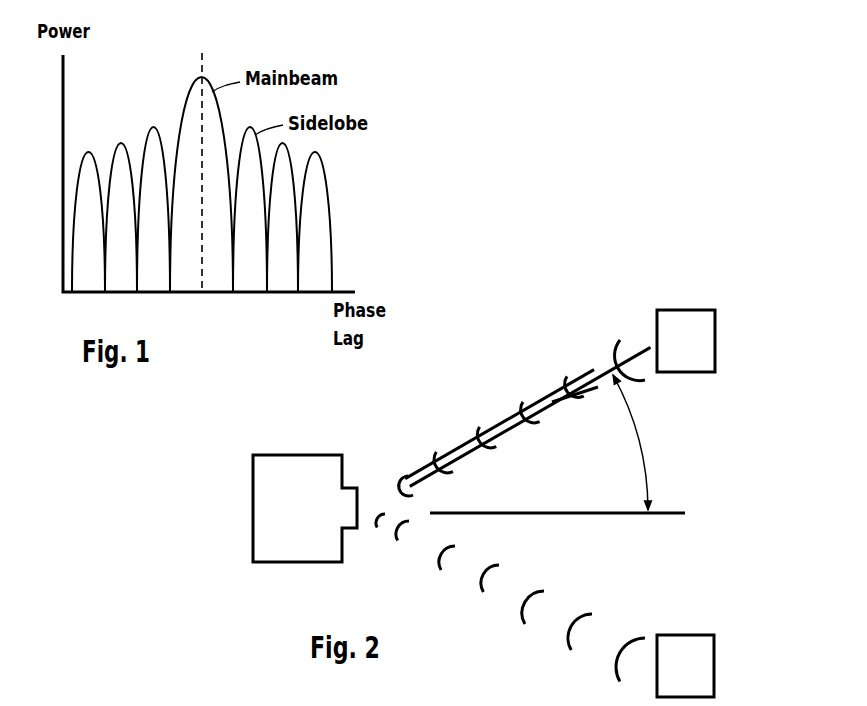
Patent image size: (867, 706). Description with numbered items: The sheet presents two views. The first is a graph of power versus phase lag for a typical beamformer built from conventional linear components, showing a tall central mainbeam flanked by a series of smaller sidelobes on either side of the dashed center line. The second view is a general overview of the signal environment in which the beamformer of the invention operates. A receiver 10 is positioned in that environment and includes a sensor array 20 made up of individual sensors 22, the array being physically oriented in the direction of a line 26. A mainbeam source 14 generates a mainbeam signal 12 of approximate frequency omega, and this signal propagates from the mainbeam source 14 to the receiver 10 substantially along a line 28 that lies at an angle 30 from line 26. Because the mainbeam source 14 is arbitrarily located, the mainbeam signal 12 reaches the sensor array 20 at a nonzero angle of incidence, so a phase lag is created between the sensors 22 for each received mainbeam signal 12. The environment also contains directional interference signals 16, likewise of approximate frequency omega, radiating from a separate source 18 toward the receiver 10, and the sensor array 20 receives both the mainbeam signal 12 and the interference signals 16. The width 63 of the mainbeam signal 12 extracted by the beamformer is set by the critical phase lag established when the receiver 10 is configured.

The receiver 10 is at (303, 513).
The mainbeam signal 12 is at (388, 500).
The mainbeam source 14 is at (695, 352).
The directional interference signals 16 is at (522, 608).
The source 18 is at (695, 677).
The sensor array 20 is at (379, 551).
The sensors 22 is at (362, 513).
The line 26 is at (672, 512).
The line 28 is at (651, 341).
The angle 30 is at (637, 433).
The width 63 is at (523, 458).